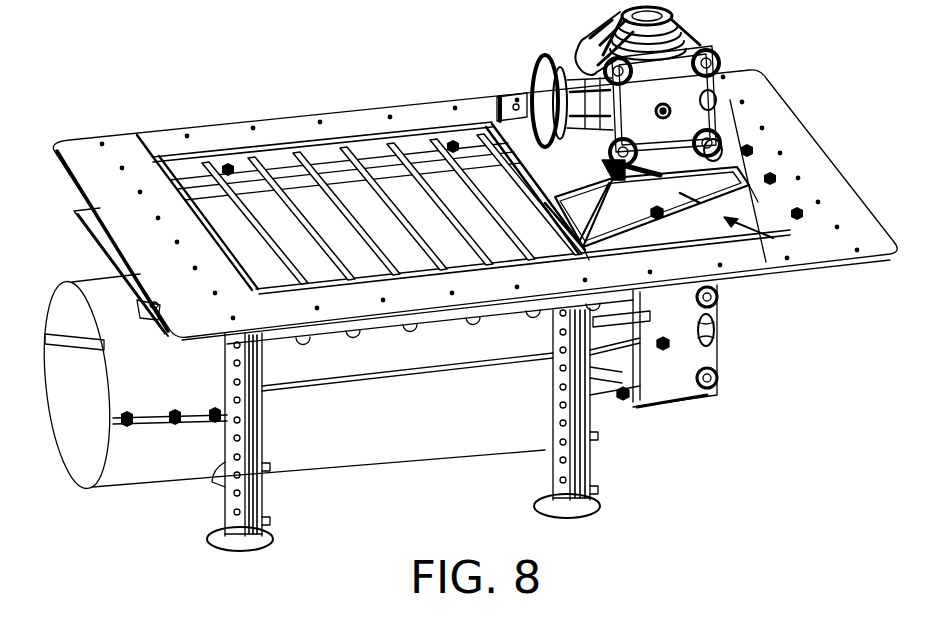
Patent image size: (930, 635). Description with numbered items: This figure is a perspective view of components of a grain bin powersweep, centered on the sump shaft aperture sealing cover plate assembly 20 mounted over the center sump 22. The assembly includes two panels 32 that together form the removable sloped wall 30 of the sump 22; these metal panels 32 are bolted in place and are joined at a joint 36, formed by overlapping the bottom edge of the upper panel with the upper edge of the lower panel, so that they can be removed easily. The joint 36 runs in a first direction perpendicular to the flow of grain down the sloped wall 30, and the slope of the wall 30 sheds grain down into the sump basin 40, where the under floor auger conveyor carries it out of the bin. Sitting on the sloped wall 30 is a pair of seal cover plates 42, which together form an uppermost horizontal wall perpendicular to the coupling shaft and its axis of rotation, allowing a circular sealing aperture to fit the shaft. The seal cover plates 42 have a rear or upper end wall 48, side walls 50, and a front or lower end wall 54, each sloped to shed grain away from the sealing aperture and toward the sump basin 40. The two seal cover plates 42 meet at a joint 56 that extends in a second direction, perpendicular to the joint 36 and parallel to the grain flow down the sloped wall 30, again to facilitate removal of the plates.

The sump shaft aperture sealing cover plate assembly 20 is at (811, 264).
The center sump 22 is at (276, 117).
The sloped wall 30 is at (811, 303).
The panels 32 is at (697, 230).
The joint 36 is at (521, 96).
The sump basin 40 is at (399, 442).
The seal cover plates 42 is at (718, 160).
The rear or upper end wall 48 is at (727, 175).
The side walls 50 is at (750, 202).
The front or lower end wall 54 is at (462, 190).
The joint 56 is at (527, 182).